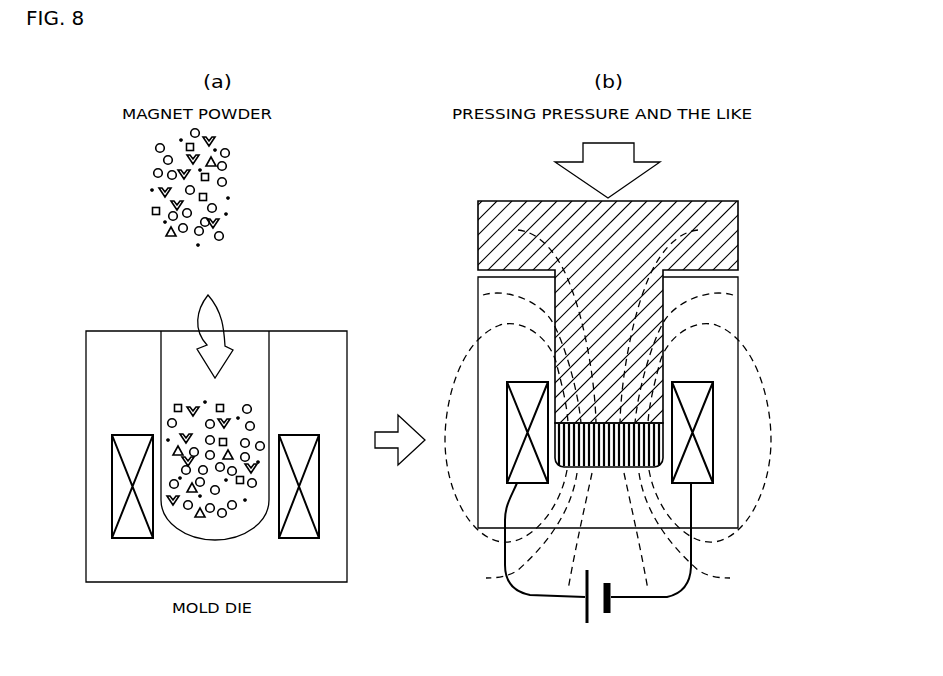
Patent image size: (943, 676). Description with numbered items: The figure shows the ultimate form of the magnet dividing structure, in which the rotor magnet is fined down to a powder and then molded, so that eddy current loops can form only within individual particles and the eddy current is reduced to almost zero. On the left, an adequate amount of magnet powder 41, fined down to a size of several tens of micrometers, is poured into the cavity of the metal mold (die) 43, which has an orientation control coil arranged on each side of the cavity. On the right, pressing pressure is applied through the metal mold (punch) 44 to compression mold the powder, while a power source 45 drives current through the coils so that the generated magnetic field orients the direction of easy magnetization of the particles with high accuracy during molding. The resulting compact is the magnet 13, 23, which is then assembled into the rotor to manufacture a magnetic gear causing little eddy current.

The magnet powder 41 is at (157, 157).
The metal mold (die) 43 is at (308, 567).
The metal mold (punch) 44 is at (720, 227).
The power source 45 is at (612, 607).
The magnet 13 is at (579, 538).
The magnet 23 is at (593, 470).